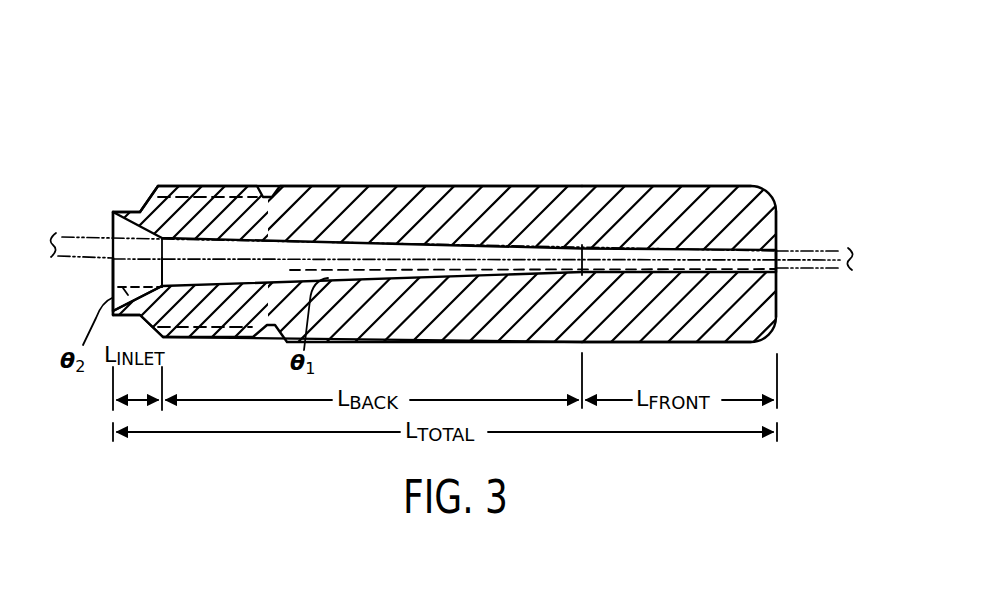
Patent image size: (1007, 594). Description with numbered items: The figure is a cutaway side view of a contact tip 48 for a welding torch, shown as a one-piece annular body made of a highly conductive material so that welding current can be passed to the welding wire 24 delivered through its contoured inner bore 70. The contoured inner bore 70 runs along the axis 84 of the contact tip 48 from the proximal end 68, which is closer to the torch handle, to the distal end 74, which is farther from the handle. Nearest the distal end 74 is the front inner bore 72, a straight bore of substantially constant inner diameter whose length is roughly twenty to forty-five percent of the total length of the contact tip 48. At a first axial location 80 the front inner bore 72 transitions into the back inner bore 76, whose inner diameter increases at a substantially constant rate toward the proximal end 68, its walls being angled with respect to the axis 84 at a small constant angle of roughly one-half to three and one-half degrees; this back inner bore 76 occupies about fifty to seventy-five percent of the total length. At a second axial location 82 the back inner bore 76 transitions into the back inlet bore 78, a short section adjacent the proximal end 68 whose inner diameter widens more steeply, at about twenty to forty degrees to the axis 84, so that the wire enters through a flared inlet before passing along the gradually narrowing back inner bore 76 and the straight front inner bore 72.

The contact tip 48 is at (730, 59).
The welding wire 24 is at (61, 229).
The contoured inner bore 70 is at (104, 281).
The proximal end 68 is at (113, 145).
The second axial location 82 is at (163, 145).
The first axial location 80 is at (582, 145).
The distal end 74 is at (777, 145).
The back inlet bore 78 is at (163, 165).
The back inner bore 76 is at (582, 165).
The front inner bore 72 is at (777, 165).
The axis 84 is at (788, 258).